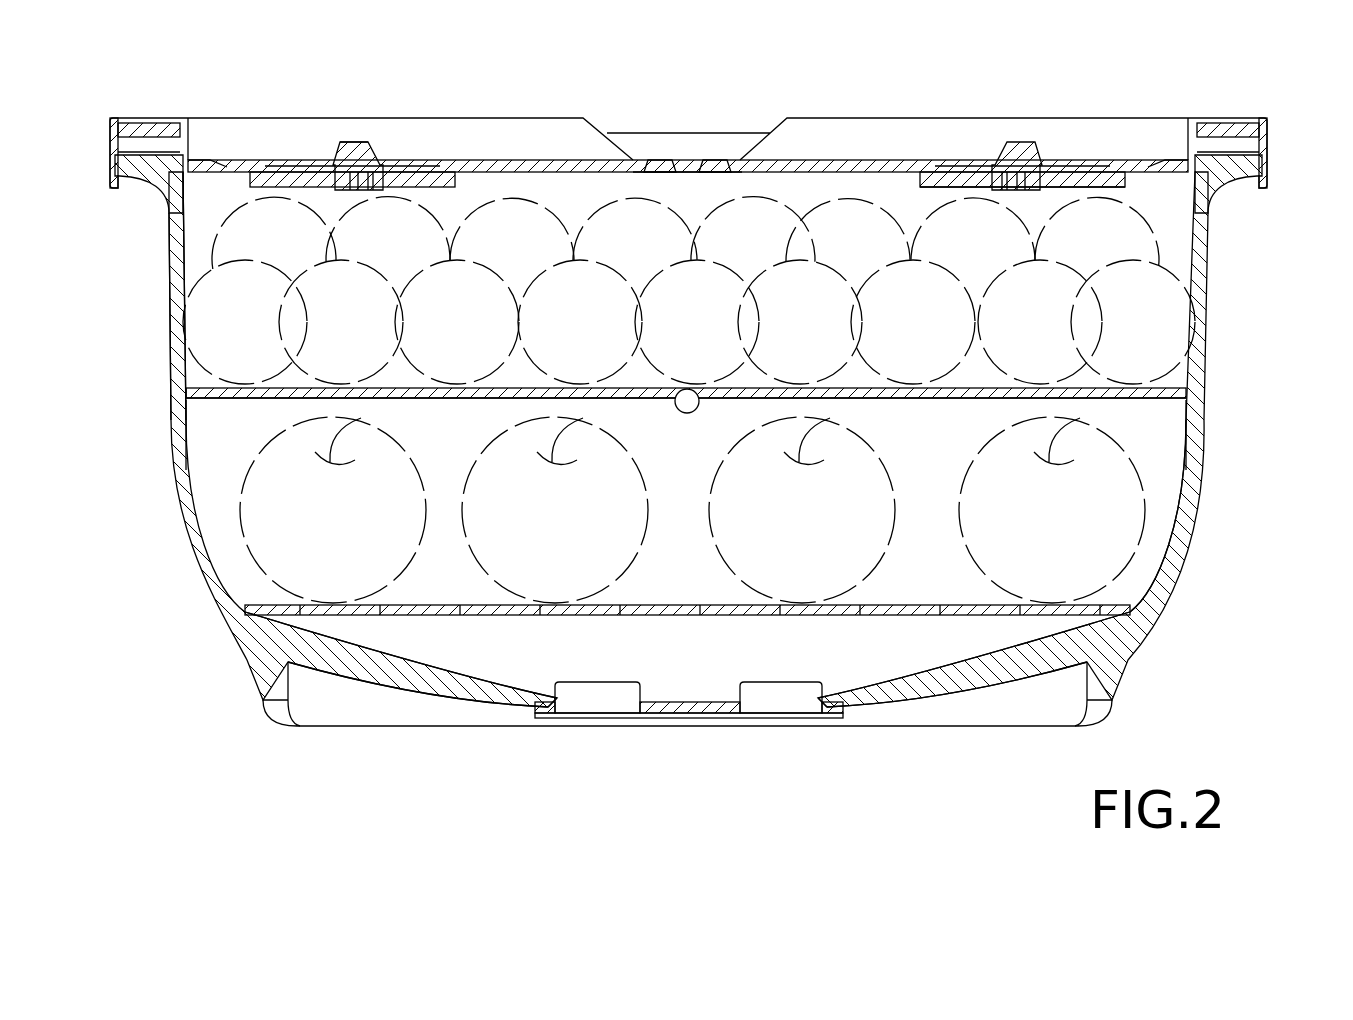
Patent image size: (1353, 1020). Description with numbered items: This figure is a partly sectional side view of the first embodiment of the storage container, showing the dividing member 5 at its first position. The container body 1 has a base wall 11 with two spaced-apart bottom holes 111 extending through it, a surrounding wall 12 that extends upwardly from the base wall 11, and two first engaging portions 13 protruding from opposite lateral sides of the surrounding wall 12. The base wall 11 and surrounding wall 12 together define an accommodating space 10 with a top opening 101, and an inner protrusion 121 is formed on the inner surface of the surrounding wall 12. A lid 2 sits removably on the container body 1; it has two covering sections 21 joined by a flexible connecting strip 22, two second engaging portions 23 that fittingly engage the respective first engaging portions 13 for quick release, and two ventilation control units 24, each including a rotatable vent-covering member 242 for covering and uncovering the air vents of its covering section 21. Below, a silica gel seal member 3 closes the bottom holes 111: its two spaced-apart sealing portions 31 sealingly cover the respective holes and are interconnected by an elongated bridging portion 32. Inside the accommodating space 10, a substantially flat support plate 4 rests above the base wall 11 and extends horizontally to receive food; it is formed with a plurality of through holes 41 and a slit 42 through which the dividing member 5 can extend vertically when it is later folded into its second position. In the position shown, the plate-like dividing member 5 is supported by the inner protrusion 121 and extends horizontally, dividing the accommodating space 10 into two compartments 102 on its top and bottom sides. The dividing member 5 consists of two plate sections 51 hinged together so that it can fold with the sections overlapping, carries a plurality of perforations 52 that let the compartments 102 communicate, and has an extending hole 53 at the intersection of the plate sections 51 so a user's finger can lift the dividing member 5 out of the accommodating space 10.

The container body 1 is at (1213, 397).
The accommodating space 10 is at (1148, 455).
The top opening 101 is at (1160, 192).
The compartments 102 is at (1193, 260).
The base wall 11 is at (970, 697).
The bottom holes 111 is at (553, 693).
The surrounding wall 12 is at (1206, 352).
The inner protrusion 121 is at (1153, 425).
The first engaging portions 13 is at (142, 178).
The lid 2 is at (241, 155).
The covering sections 21 is at (530, 160).
The flexible connecting strip 22 is at (700, 160).
The second engaging portions 23 is at (118, 130).
The ventilation control units 24 is at (378, 138).
The vent-covering member 242 is at (351, 150).
The seal member 3 is at (720, 726).
The sealing portions 31 is at (597, 697).
The elongated bridging portion 32 is at (688, 720).
The support plate 4 is at (1038, 617).
The through holes 41 is at (1022, 616).
The slit 42 is at (660, 618).
The dividing member 5 is at (210, 388).
The plate sections 51 is at (1082, 387).
The perforations 52 is at (187, 400).
The extending hole 53 is at (684, 389).